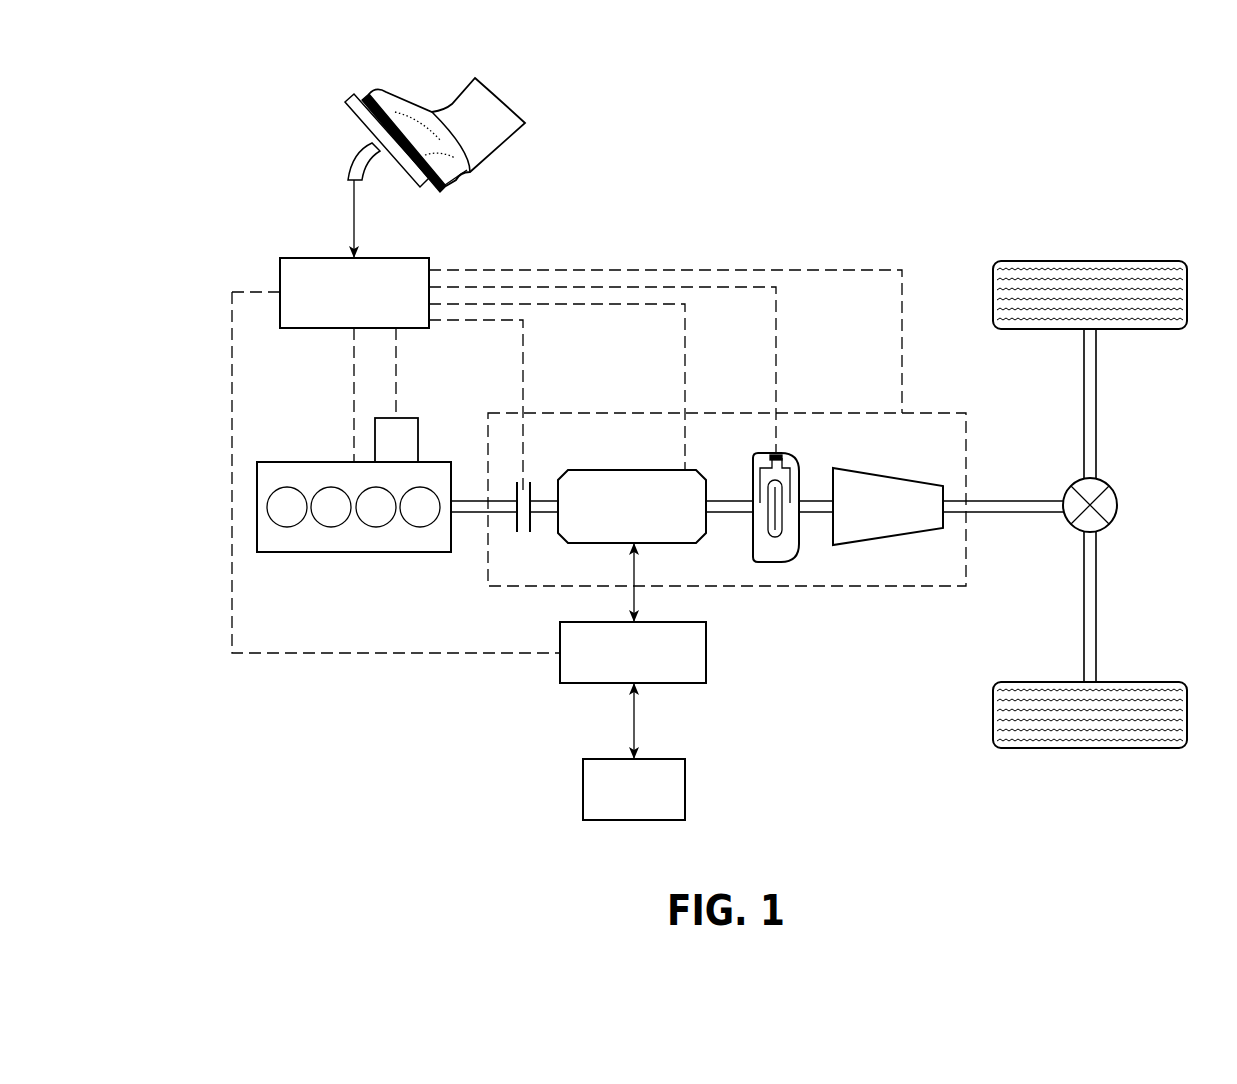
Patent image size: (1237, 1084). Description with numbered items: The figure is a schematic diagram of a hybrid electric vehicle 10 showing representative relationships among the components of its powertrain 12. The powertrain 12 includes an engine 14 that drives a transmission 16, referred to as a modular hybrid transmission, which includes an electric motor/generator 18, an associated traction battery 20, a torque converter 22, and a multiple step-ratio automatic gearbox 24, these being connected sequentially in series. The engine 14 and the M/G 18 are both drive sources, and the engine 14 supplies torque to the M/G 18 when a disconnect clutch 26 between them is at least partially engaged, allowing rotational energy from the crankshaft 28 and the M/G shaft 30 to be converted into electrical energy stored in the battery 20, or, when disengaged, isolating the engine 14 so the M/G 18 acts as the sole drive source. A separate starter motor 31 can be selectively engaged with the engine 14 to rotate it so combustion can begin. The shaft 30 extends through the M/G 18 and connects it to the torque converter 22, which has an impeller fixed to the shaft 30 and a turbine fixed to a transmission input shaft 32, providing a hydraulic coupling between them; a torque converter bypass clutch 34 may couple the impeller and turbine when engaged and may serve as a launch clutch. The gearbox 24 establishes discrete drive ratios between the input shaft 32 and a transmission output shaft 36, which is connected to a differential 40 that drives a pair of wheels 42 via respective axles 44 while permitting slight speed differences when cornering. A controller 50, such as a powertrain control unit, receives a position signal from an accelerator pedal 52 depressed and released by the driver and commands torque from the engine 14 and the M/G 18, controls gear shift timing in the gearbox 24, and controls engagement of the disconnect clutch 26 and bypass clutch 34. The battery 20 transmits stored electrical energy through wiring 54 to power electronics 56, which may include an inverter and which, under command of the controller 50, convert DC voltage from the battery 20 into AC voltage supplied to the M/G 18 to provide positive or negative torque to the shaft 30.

The hybrid electric vehicle 10 is at (878, 176).
The powertrain 12 is at (467, 698).
The engine 14 is at (311, 462).
The transmission 16 is at (742, 413).
The electric motor/generator (M/G) 18 is at (630, 470).
The traction battery 20 is at (583, 790).
The torque converter 22 is at (772, 562).
The gearbox 24 is at (888, 545).
The disconnect clutch 26 is at (532, 522).
The crankshaft 28 is at (484, 500).
The M/G shaft 30 is at (543, 500).
The starter motor 31 is at (404, 418).
The transmission input shaft 32 is at (810, 500).
The torque converter bypass clutch 34 is at (780, 462).
The transmission output shaft 36 is at (1015, 500).
The differential 40 is at (1118, 506).
The wheels 42 is at (1090, 261).
The axles 44 is at (1097, 405).
The controller 50 is at (317, 258).
The accelerator pedal 52 is at (363, 133).
The wiring 54 is at (630, 727).
The power electronics 56 is at (706, 651).